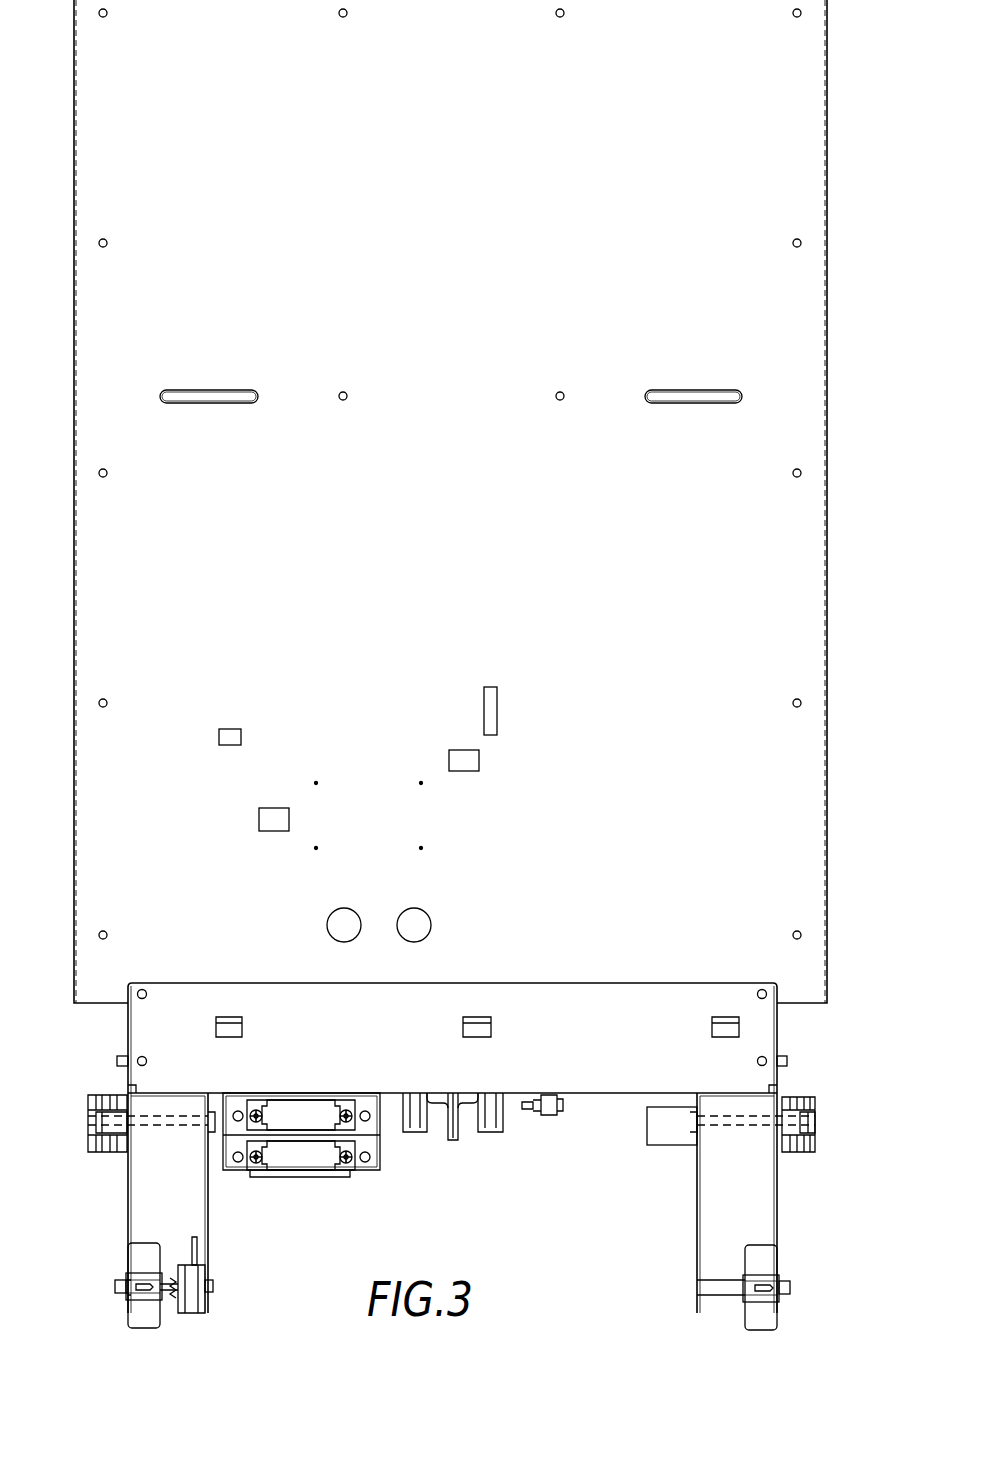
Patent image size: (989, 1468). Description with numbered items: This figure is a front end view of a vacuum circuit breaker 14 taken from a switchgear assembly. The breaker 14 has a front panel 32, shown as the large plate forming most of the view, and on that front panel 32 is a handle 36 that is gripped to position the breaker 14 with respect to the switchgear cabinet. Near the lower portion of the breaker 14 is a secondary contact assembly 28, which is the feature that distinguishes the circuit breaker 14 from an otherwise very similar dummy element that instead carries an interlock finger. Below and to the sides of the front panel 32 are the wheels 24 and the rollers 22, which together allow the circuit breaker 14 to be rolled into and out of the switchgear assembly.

The vacuum circuit breaker 14 is at (834, 349).
The front panel 32 is at (800, 103).
The handle 36 is at (685, 391).
The wheels 24 is at (814, 1097).
The secondary contact assembly 28 is at (293, 1178).
The rollers 22 is at (762, 1338).